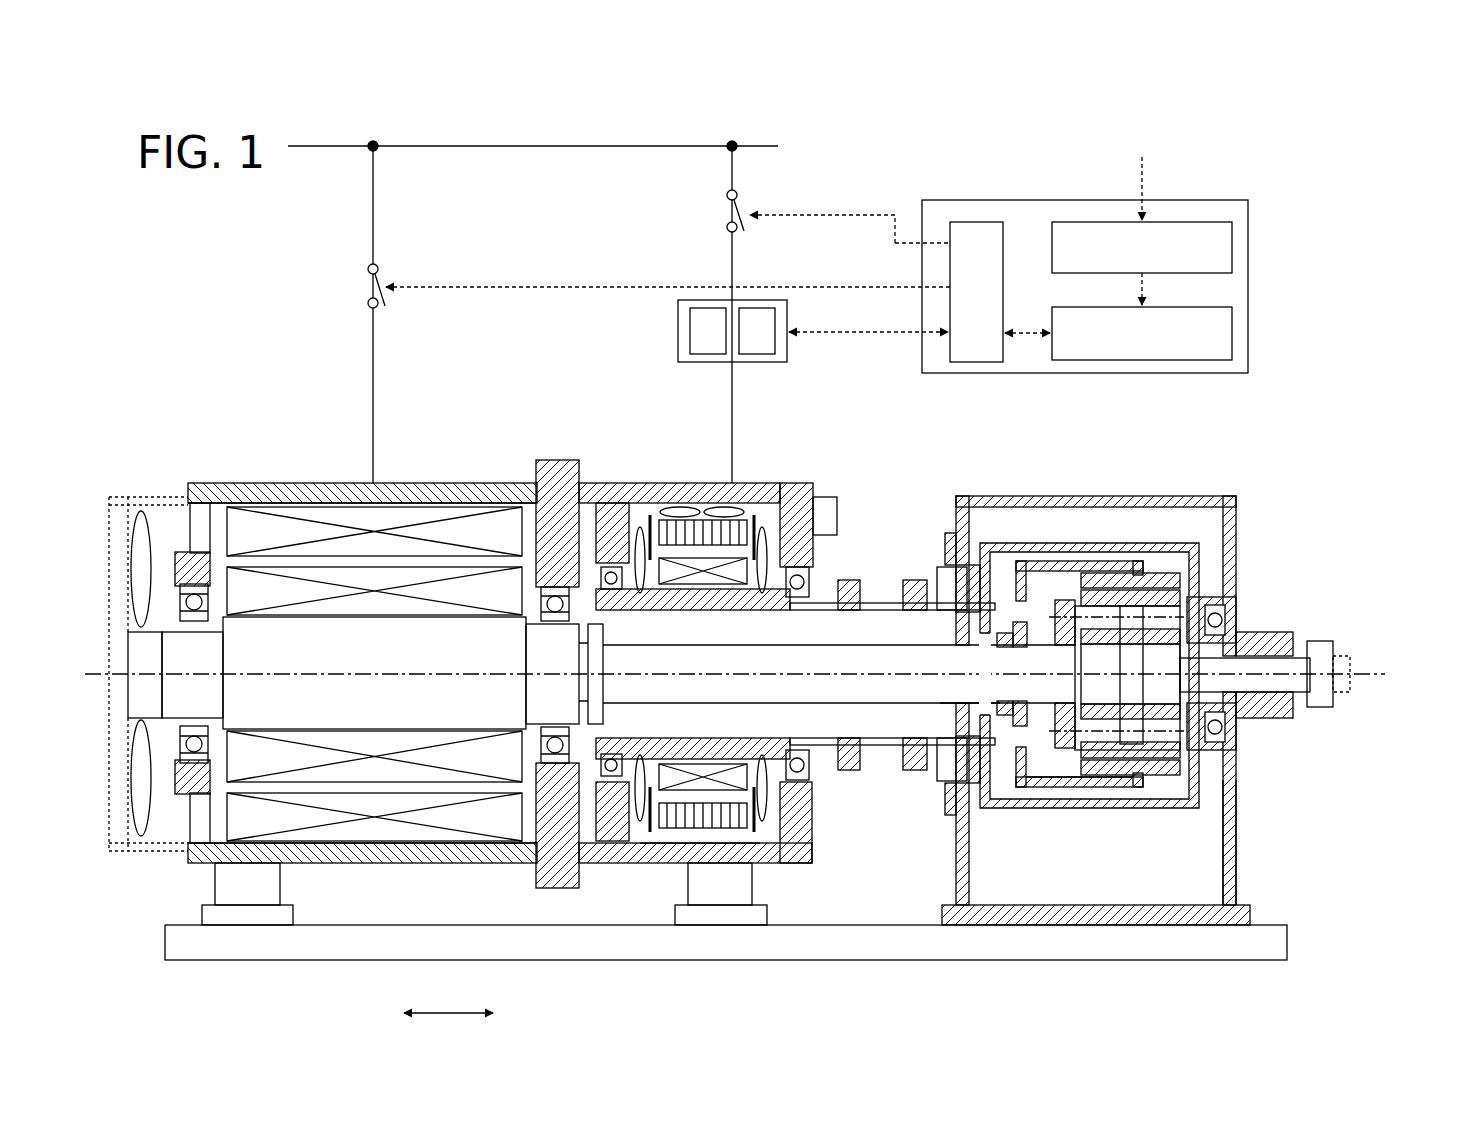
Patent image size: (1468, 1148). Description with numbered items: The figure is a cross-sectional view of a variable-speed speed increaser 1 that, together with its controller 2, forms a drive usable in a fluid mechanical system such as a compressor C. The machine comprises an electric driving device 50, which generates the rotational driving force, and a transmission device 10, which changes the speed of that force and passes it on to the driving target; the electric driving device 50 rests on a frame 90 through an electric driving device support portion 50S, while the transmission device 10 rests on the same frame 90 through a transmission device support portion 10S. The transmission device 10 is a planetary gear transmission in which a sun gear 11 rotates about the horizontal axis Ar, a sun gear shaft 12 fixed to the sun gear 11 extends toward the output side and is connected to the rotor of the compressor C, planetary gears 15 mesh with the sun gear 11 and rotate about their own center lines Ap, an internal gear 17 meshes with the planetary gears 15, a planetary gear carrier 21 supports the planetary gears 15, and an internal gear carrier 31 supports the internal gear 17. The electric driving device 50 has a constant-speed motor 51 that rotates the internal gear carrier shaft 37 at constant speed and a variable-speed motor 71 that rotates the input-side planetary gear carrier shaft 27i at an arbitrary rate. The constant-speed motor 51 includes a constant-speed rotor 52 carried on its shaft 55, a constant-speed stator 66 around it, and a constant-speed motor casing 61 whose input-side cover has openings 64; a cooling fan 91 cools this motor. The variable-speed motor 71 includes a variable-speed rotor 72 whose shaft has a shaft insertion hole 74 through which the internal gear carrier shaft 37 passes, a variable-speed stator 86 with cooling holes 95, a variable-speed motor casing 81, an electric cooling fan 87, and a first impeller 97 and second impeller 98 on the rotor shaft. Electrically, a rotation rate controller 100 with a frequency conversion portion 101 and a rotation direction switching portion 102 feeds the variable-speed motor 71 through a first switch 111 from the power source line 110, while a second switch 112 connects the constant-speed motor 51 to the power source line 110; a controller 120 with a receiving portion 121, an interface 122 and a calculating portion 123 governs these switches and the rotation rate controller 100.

The variable-speed speed increaser 1 is at (1312, 188).
The controller 2 is at (1122, 243).
The transmission device 10 is at (1236, 502).
The transmission device support portion 10S is at (1240, 870).
The sun gear 11 is at (1173, 682).
The sun gear shaft 12 is at (1293, 688).
The planetary gears 15 is at (1168, 598).
The internal gear 17 is at (1150, 573).
The planetary gear carrier 21 is at (1190, 543).
The input-side planetary gear carrier shaft 27i is at (975, 660).
The internal gear carrier 31 is at (1080, 790).
The internal gear carrier shaft 37 is at (985, 703).
The electric driving device 50 is at (197, 480).
The electric driving device support portion 50S is at (270, 890).
The constant-speed motor 51 is at (237, 480).
The constant-speed rotor 52 is at (480, 640).
The motor shaft 55 is at (812, 655).
The constant-speed motor casing 61 is at (420, 488).
The openings 64 is at (165, 497).
The constant-speed stator 66 is at (300, 505).
The variable-speed motor 71 is at (795, 478).
The variable-speed rotor 72 is at (720, 760).
The shaft insertion hole 74 is at (598, 585).
The variable-speed motor casing 81 is at (592, 860).
The variable-speed stator 86 is at (697, 845).
The electric cooling fan 87 is at (683, 503).
The frame 90 is at (1290, 946).
The cooling fan 91 is at (143, 835).
The cooling holes 95 is at (883, 603).
The first impeller 97 is at (640, 590).
The second impeller 98 is at (762, 590).
The rotation rate controller 100 is at (768, 314).
The frequency conversion portion 101 is at (705, 308).
The rotation direction switching portion 102 is at (760, 308).
The power source line 110 is at (572, 148).
The first switch 111 is at (745, 205).
The second switch 112 is at (386, 290).
The controller 120 is at (1182, 195).
The receiving portion 121 is at (1232, 247).
The interface 122 is at (990, 222).
The calculating portion 123 is at (1232, 333).
The center lines of planetary gears Ap is at (1168, 617).
The axis Ar is at (1380, 672).
The compressor C is at (1322, 645).